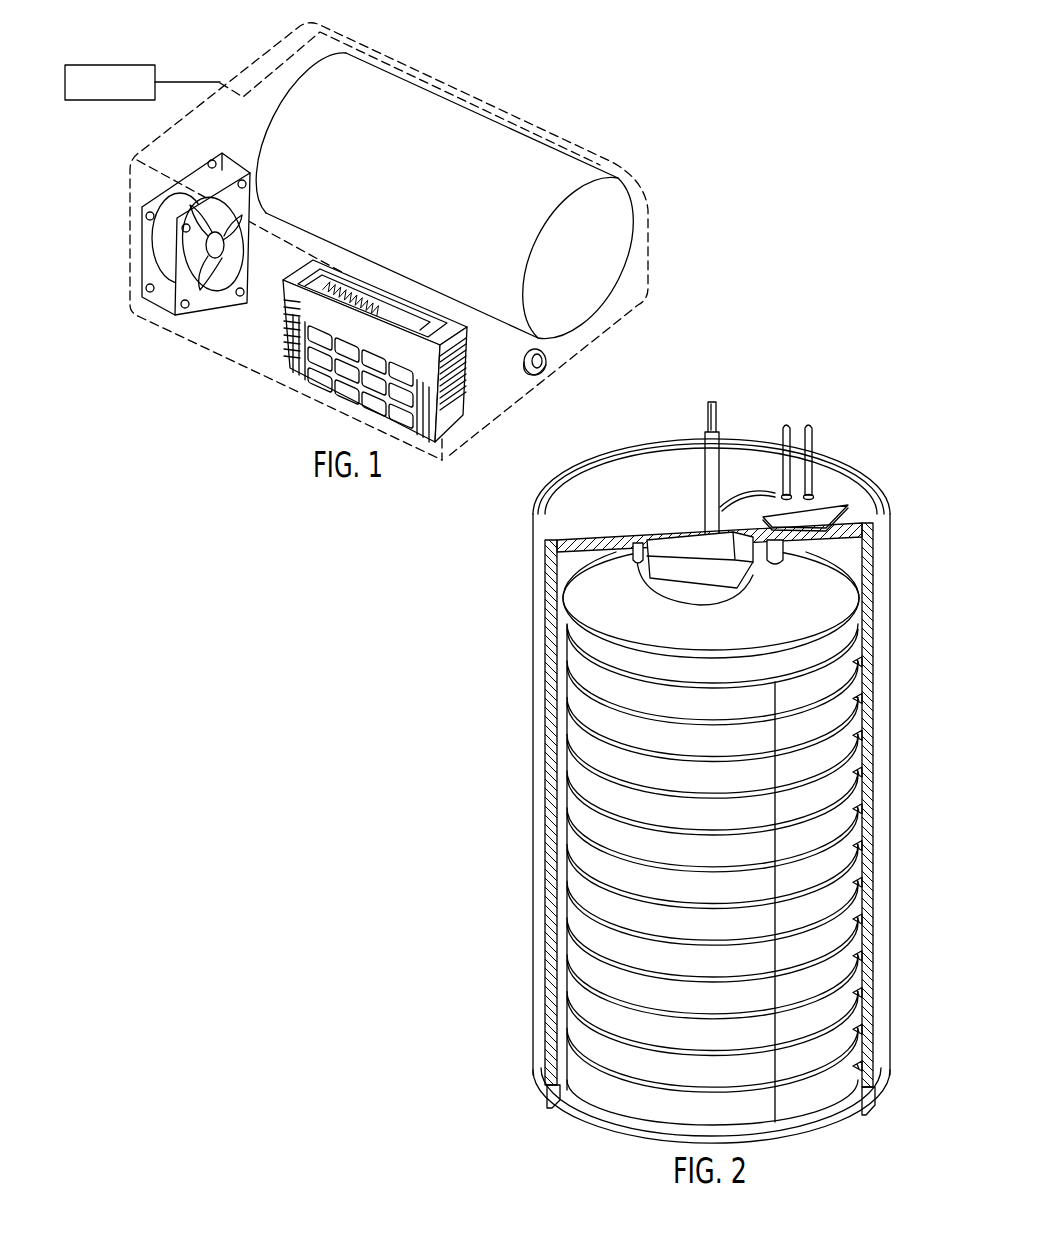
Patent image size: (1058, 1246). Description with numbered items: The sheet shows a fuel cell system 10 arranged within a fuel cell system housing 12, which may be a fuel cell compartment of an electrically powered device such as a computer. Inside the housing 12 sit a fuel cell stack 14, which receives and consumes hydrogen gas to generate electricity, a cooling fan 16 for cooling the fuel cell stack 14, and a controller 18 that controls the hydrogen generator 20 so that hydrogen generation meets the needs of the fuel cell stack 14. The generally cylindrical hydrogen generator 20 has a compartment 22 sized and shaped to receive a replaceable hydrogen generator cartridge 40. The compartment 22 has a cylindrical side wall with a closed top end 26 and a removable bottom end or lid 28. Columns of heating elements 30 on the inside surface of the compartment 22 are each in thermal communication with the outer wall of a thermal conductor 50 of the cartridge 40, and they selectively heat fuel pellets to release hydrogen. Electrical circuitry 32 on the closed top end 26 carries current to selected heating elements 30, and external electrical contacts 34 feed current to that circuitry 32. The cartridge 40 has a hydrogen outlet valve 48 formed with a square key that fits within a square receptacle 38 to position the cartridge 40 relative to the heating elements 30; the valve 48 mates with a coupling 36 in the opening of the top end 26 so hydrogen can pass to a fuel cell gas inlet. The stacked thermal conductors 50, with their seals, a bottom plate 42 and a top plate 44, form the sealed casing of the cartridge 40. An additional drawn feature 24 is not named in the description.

In FIG. 1, the fuel cell system 10 is at (549, 75).
In FIG. 1, the fuel cell system housing 12 is at (603, 146).
In FIG. 1, the fuel cell stack 14 is at (467, 405).
In FIG. 1, the cooling fan 16 is at (162, 247).
In FIG. 1, the controller 18 is at (157, 67).
In FIG. 1, the hydrogen generator 20 is at (420, 103).
In FIG. 2, the hydrogen generator 20 is at (470, 612).
In FIG. 1, the compartment 22 is at (600, 305).
In FIG. 2, the compartment 22 is at (538, 718).
In FIG. 2, the outer wall 24 is at (531, 574).
In FIG. 2, the closed top end 26 is at (658, 468).
In FIG. 2, the removable bottom end or lid 28 is at (548, 1105).
In FIG. 2, the heating elements 30 is at (866, 772).
In FIG. 2, the electrical circuitry 32 is at (830, 500).
In FIG. 2, the external electrical contacts 34 is at (806, 425).
In FIG. 2, the coupling 36 is at (718, 428).
In FIG. 2, the square receptacle 38 is at (776, 560).
In FIG. 2, the hydrogen generator cartridge 40 is at (588, 800).
In FIG. 2, the bottom plate 42 is at (598, 1128).
In FIG. 2, the top plate 44 is at (590, 603).
In FIG. 2, the hydrogen outlet valve 48 is at (690, 530).
In FIG. 2, the thermal conductors 50 is at (807, 708).